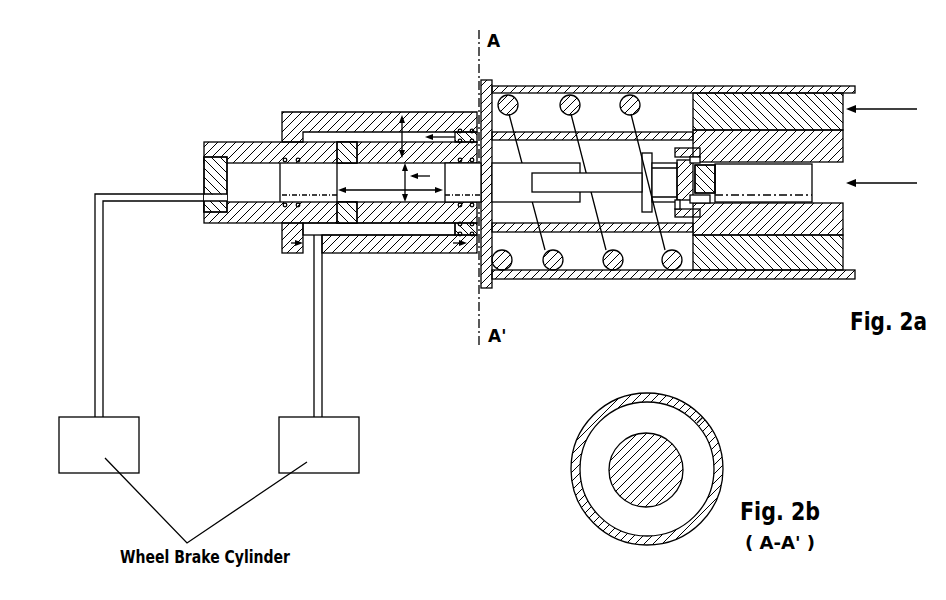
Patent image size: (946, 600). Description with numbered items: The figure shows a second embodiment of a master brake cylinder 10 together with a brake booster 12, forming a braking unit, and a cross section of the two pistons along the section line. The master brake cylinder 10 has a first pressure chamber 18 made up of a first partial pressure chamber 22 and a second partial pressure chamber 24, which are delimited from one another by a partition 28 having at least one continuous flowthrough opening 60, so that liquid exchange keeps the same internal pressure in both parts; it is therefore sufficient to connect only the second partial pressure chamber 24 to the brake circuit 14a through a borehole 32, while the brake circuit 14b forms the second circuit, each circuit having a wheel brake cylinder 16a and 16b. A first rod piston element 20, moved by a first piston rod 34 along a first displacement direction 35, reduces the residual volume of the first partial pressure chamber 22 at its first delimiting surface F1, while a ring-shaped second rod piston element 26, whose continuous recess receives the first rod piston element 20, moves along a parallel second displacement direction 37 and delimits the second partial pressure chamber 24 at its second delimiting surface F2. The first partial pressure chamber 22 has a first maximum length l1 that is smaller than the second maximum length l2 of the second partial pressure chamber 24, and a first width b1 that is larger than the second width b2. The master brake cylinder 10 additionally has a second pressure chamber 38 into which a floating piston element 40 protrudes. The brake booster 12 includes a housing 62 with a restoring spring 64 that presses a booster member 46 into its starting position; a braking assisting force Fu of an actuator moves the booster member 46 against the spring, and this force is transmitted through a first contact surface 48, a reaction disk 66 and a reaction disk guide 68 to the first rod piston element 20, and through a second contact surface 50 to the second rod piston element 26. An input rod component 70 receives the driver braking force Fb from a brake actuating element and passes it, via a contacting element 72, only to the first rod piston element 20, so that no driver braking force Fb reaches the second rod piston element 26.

In FIG. 2a, the master brake cylinder 10 is at (250, 150).
In FIG. 2a, the brake booster 12 is at (872, 48).
In FIG. 2a, the brake circuit 14a is at (320, 381).
In FIG. 2a, the brake circuit 14b is at (98, 350).
In FIG. 2a, the wheel brake cylinder 16a is at (360, 445).
In FIG. 2a, the wheel brake cylinder 16b is at (140, 445).
In FIG. 2a, the first pressure chamber 18 is at (330, 127).
In FIG. 2a, the first rod piston element 20 is at (520, 188).
In FIG. 2b, the first rod piston element 20 is at (623, 476).
In FIG. 2a, the first partial pressure chamber 22 is at (388, 173).
In FIG. 2a, the second partial pressure chamber 24 is at (440, 238).
In FIG. 2a, the second rod piston element 26 is at (603, 135).
In FIG. 2b, the second rod piston element 26 is at (582, 498).
In FIG. 2a, the partition 28 is at (297, 207).
In FIG. 2a, the borehole 32 is at (316, 255).
In FIG. 2a, the first piston rod 34 is at (600, 183).
In FIG. 2a, the first displacement direction 35 is at (430, 176).
In FIG. 2a, the second displacement direction 37 is at (450, 130).
In FIG. 2a, the second pressure chamber 38 is at (237, 178).
In FIG. 2a, the floating piston element 40 is at (283, 175).
In FIG. 2a, the booster member 46 is at (808, 108).
In FIG. 2a, the first contact surface 48 is at (704, 160).
In FIG. 2a, the second contact surface 50 is at (688, 148).
In FIG. 2a, the flowthrough opening 60 is at (338, 228).
In FIG. 2a, the housing 62 is at (632, 100).
In FIG. 2a, the restoring spring 64 is at (570, 102).
In FIG. 2a, the reaction disk 66 is at (672, 150).
In FIG. 2a, the reaction disk guide 68 is at (670, 212).
In FIG. 2a, the input rod component 70 is at (802, 182).
In FIG. 2a, the contacting element 72 is at (707, 173).
In FIG. 2a, the first delimiting surface F1 is at (467, 127).
In FIG. 2b, the first delimiting surface F1 is at (700, 420).
In FIG. 2b, the second delimiting surface F2 is at (653, 470).
In FIG. 2a, the braking assisting force Fu is at (881, 101).
In FIG. 2a, the driver braking force Fb is at (881, 174).
In FIG. 2a, the first width b1 is at (407, 203).
In FIG. 2a, the second width b2 is at (410, 110).
In FIG. 2a, the first maximum length l1 is at (380, 191).
In FIG. 2a, the second maximum length l2 is at (290, 248).